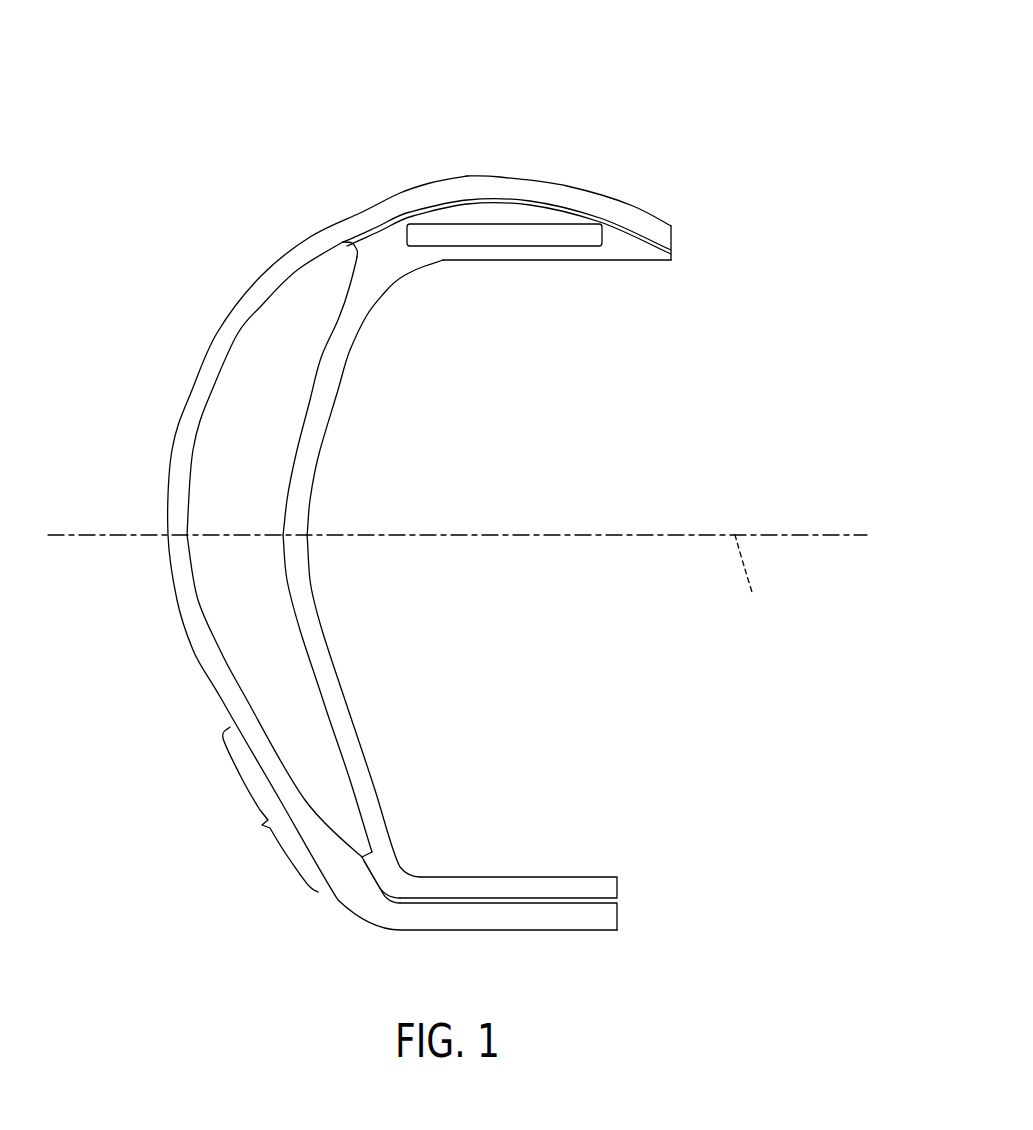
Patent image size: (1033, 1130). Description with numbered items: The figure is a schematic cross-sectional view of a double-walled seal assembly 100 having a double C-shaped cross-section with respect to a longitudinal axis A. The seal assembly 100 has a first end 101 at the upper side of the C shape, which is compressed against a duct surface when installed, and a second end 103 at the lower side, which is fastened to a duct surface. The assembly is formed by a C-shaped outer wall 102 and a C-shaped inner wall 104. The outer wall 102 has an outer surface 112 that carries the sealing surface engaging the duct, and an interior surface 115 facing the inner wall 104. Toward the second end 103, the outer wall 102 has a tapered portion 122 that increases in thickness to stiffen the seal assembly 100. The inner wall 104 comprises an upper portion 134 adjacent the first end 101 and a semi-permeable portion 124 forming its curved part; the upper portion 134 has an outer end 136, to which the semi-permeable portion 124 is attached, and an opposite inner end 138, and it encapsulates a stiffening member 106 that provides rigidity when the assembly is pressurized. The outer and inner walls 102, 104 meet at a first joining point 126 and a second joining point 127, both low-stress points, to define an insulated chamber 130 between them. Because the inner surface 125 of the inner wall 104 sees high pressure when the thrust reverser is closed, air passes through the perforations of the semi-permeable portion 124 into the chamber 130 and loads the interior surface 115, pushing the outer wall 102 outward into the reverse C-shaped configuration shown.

The double-walled seal assembly 100 is at (190, 98).
The first end 101 is at (723, 193).
The outer wall 102 is at (102, 352).
The second end 103 is at (663, 858).
The inner wall 104 is at (367, 412).
The stiffening member 106 is at (557, 223).
The outer surface 112 is at (220, 328).
The interior surface 115 is at (190, 468).
The tapered portion 122 is at (268, 809).
The semi-permeable portion 124 is at (367, 587).
The inner surface 125 is at (343, 693).
The first joining point 126 is at (343, 242).
The second joining point 127 is at (392, 897).
The chamber 130 is at (250, 612).
The upper portion 134 is at (523, 253).
The outer end 136 is at (372, 245).
The inner end 138 is at (658, 255).